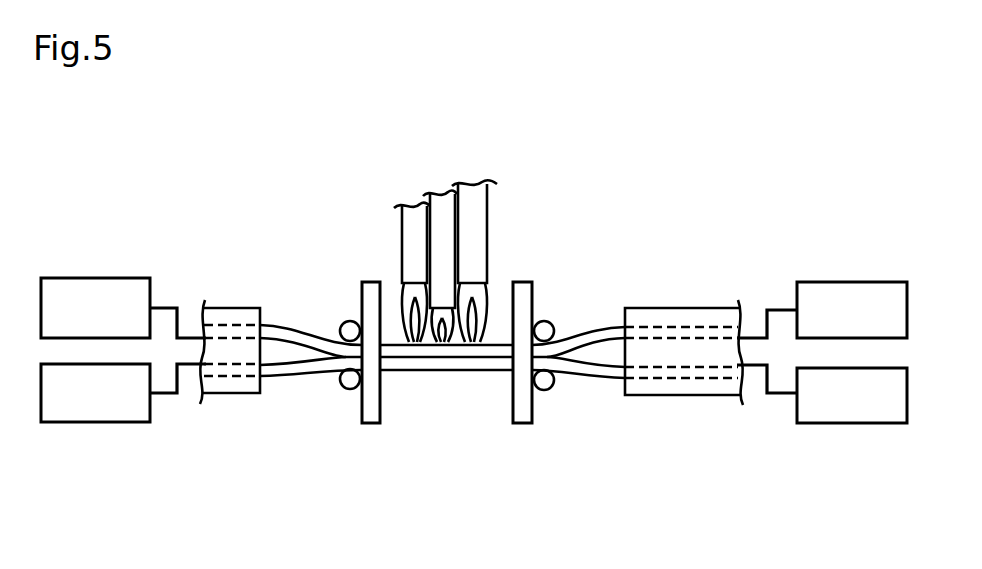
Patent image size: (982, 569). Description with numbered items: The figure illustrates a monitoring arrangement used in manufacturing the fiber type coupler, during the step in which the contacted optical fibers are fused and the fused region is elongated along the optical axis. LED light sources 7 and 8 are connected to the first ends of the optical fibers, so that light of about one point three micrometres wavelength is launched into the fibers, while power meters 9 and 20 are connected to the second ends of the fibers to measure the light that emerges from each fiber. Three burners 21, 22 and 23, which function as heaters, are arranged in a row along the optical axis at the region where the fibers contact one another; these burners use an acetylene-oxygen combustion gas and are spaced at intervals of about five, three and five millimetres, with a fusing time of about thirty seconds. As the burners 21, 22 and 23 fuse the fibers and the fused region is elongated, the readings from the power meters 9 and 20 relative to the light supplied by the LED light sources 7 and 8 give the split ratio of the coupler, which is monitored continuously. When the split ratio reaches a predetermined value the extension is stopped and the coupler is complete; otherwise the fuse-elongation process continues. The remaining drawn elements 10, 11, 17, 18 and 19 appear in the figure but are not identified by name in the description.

The LED light source 7 is at (233, 395).
The LED light source 8 is at (342, 389).
The power meter 9 is at (344, 322).
The lower right roller 10 is at (550, 390).
The upper right roller 11 is at (553, 322).
The LED 1 light source 17 is at (840, 282).
The LED 2 light source 18 is at (843, 423).
The photomultiplier PM 1 19 is at (96, 278).
The power meter 20 is at (100, 422).
The burner 21 is at (400, 226).
The burner 22 is at (440, 193).
The burner 23 is at (490, 214).